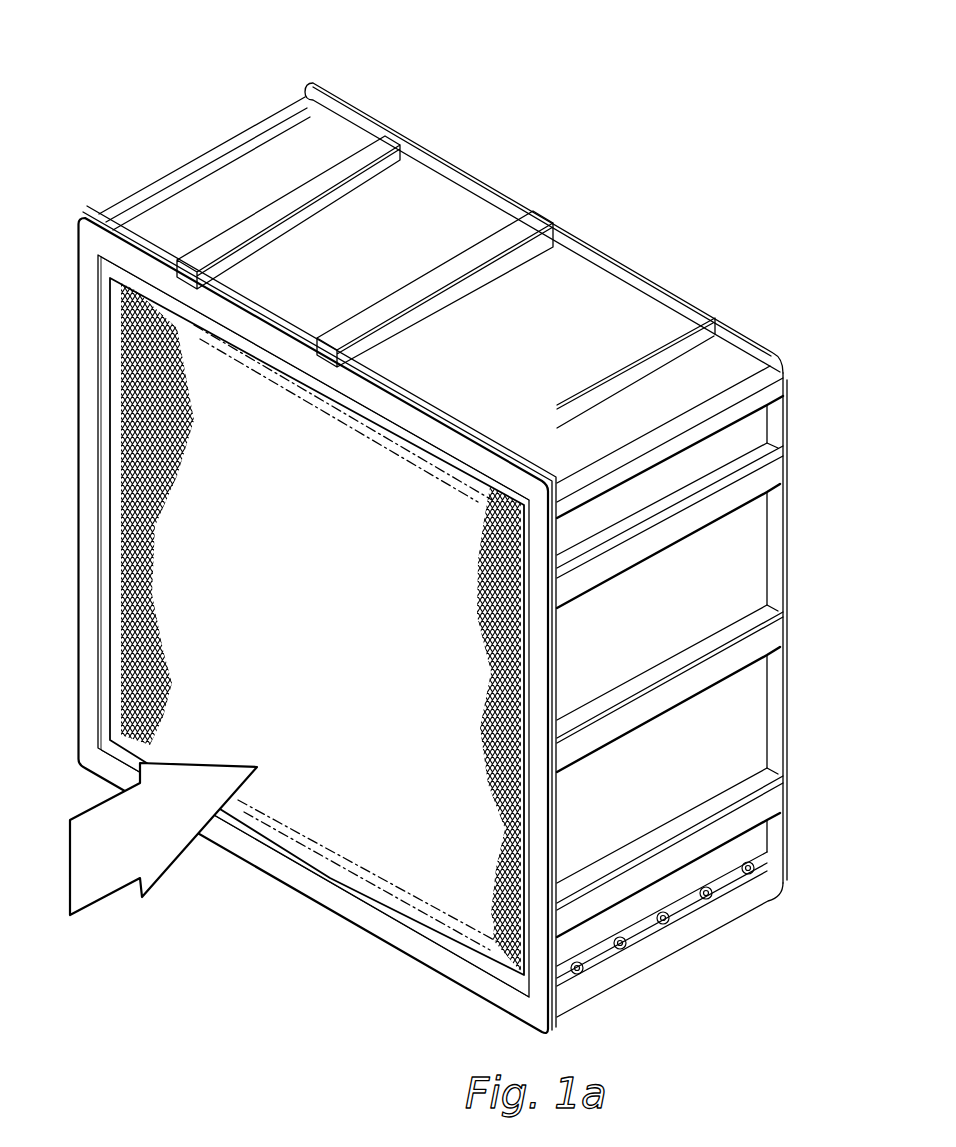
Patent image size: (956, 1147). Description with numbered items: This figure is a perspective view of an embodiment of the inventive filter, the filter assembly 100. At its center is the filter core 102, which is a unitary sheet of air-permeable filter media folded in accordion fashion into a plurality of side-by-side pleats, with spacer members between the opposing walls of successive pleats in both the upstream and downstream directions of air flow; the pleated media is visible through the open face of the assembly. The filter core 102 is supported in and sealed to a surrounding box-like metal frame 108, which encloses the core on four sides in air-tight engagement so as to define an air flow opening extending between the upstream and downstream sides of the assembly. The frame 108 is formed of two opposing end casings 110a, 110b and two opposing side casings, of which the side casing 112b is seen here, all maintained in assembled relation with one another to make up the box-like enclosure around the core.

The filter assembly 100 is at (452, 527).
The filter core 102 is at (297, 790).
The box-like metal frame 108 is at (223, 147).
The end casing 110a is at (663, 953).
The end casing 110b is at (418, 205).
The side casing 112b is at (740, 567).